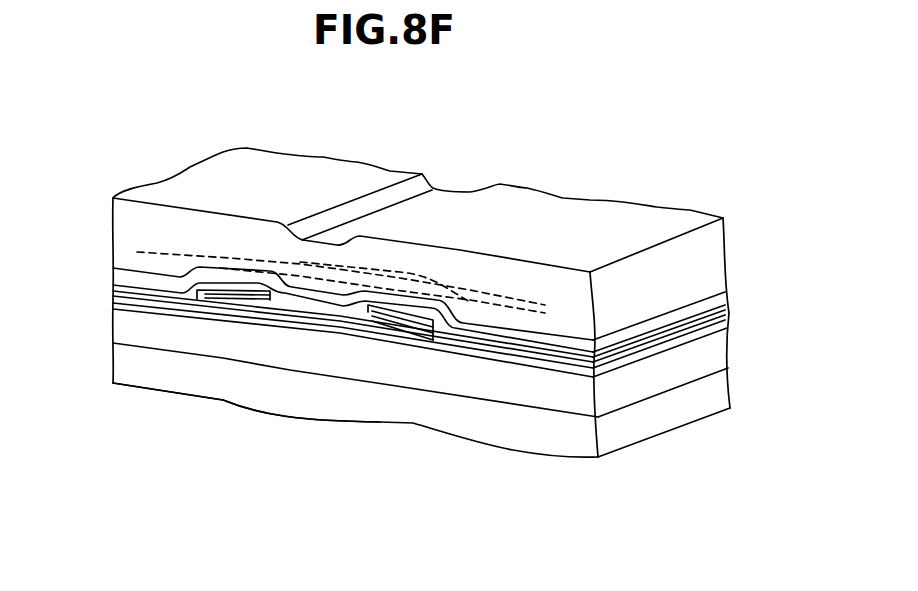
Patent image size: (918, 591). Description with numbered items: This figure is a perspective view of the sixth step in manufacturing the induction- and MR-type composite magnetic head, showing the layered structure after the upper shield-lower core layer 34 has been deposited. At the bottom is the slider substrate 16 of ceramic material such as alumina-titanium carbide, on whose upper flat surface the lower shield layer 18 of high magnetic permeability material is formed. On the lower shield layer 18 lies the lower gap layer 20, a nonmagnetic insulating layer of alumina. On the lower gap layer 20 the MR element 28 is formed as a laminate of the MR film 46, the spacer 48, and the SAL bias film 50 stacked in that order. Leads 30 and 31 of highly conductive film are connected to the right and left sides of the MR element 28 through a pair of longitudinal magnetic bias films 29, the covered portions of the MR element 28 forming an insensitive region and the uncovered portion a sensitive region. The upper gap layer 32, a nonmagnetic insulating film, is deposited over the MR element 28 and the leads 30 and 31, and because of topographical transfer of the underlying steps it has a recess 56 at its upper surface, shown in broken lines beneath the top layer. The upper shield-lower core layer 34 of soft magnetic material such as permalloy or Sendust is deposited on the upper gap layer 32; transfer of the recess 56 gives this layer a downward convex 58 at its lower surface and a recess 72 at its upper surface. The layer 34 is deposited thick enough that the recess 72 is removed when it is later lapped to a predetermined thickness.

The slider substrate 16 is at (133, 363).
The lower shield layer 18 is at (130, 327).
The lower gap layer 20 is at (130, 301).
The MR element 28 is at (378, 419).
The longitudinal magnetic bias films 29 is at (222, 305).
The lead 30 is at (544, 352).
The lead 31 is at (122, 290).
The upper gap layer 32 is at (127, 278).
The upper shield-lower core layer 34 is at (125, 240).
The MR film 46 is at (367, 322).
The spacer 48 is at (393, 332).
The SAL bias film 50 is at (422, 337).
The recess 56 is at (322, 265).
The downward convex 58 is at (308, 320).
The recess 72 is at (403, 207).